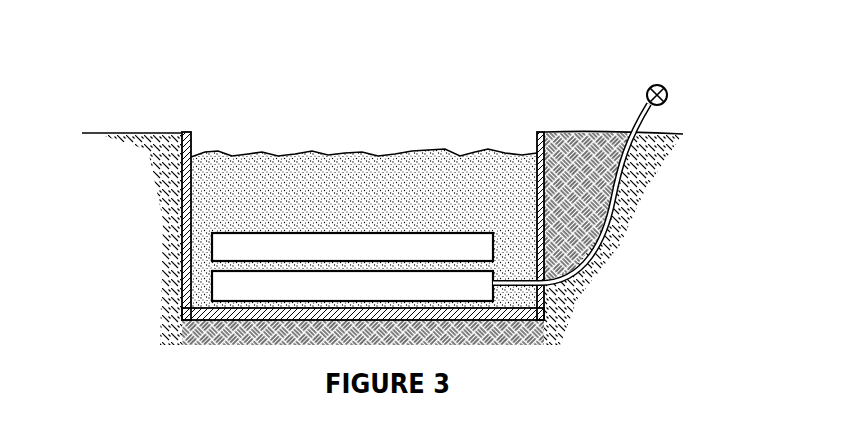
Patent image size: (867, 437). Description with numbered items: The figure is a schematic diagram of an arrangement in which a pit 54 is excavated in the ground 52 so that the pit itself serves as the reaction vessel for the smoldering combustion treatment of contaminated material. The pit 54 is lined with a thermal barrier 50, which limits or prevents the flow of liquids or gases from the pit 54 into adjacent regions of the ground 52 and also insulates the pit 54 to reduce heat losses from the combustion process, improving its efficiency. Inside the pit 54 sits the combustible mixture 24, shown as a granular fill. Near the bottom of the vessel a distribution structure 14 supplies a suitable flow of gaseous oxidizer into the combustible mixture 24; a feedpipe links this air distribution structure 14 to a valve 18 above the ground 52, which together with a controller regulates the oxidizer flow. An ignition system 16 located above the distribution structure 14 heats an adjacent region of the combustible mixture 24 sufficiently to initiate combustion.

The distribution structure 14 is at (222, 290).
The ignition system 16 is at (225, 250).
The valve 18 is at (668, 100).
The combustible mixture 24 is at (338, 195).
The thermal barrier 50 is at (541, 297).
The ground 52 is at (680, 178).
The pit 54 is at (395, 137).